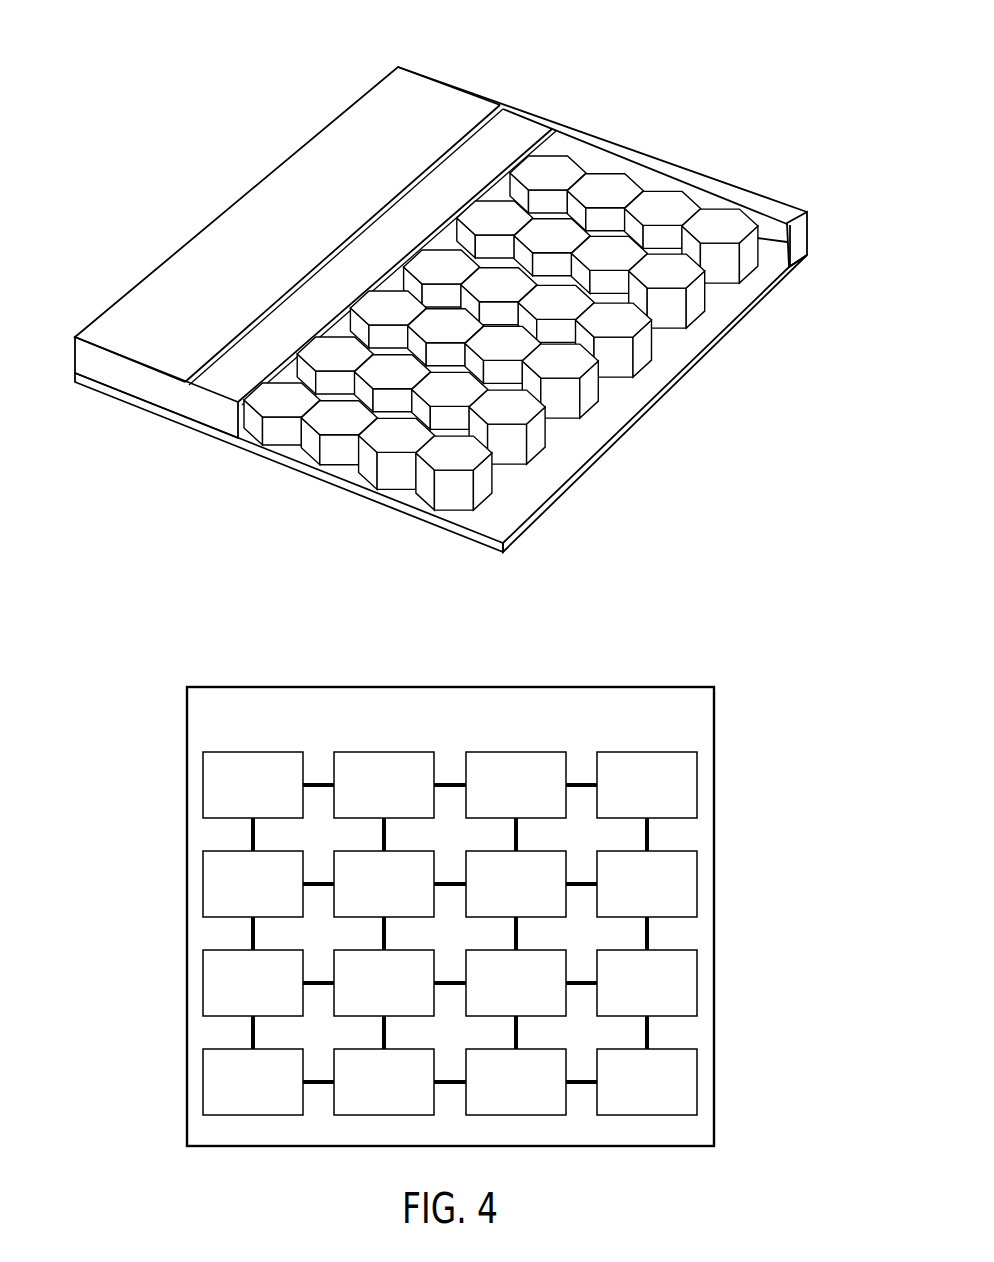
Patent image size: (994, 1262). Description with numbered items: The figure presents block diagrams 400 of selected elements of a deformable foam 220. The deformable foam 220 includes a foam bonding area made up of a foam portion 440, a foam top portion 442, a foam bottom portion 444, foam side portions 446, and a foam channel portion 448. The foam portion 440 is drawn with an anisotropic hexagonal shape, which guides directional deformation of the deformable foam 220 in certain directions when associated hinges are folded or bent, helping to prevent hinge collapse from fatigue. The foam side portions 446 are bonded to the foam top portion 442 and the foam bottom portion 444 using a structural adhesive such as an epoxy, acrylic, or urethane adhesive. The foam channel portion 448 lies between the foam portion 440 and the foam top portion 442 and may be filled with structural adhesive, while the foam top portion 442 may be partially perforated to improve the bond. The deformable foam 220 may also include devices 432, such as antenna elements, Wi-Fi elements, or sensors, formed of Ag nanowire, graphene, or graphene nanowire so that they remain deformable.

The deformable foam 220 is at (465, 744).
The block diagrams 400 is at (135, 63).
The foam portion 440 is at (611, 351).
The foam top portion 442 is at (284, 186).
The foam bottom portion 444 is at (638, 508).
The foam side portions 446 is at (695, 168).
The foam channel portion 448 is at (508, 135).
The devices 432 is at (450, 933).